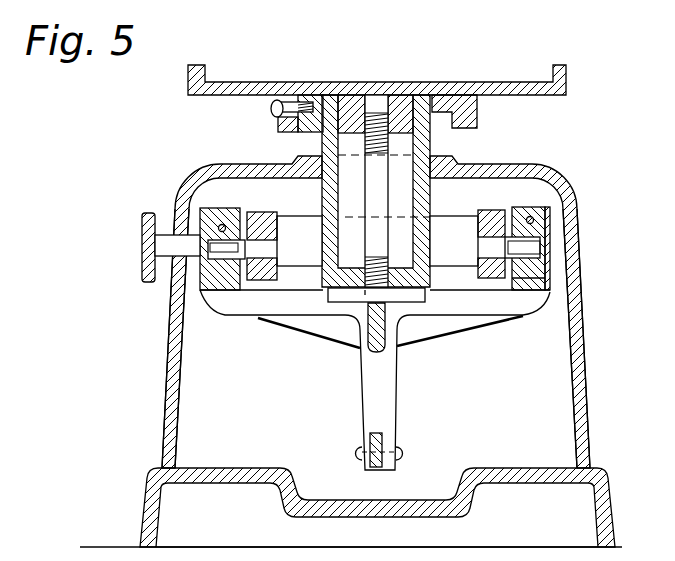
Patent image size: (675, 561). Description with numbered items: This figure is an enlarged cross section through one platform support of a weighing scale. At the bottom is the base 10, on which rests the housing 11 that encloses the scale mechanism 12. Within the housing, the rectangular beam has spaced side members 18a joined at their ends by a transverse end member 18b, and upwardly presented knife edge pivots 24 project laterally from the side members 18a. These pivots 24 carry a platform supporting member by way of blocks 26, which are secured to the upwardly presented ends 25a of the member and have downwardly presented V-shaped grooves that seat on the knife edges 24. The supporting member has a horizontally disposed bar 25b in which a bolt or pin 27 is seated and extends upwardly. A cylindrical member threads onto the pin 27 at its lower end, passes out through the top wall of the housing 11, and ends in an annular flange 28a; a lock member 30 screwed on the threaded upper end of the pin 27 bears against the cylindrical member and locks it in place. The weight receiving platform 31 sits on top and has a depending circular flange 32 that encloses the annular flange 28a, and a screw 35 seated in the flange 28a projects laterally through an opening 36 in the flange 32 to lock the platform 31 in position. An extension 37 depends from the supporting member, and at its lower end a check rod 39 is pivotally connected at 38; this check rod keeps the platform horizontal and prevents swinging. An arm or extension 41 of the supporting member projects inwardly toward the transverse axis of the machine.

The base 10 is at (150, 490).
The housing 11 is at (167, 398).
The scale mechanism 12 is at (537, 203).
The side members 18a is at (515, 160).
The transverse end member 18b is at (377, 241).
The knife edge pivots 24 is at (205, 288).
The upwardly presented ends 25a is at (543, 288).
The horizontally disposed bar 25b is at (417, 317).
The blocks 26 is at (225, 213).
The bolt or pin 27 is at (384, 198).
The annular flange 28a is at (478, 112).
The lock member 30 is at (347, 107).
The weight receiving platform 31 is at (566, 88).
The depending circular flange 32 is at (280, 127).
The screw 35 is at (270, 108).
The opening 36 is at (288, 102).
The extension 37 is at (375, 392).
The pivotal connection 38 is at (358, 453).
The check rod 39 is at (382, 446).
The arm or extension 41 is at (360, 348).